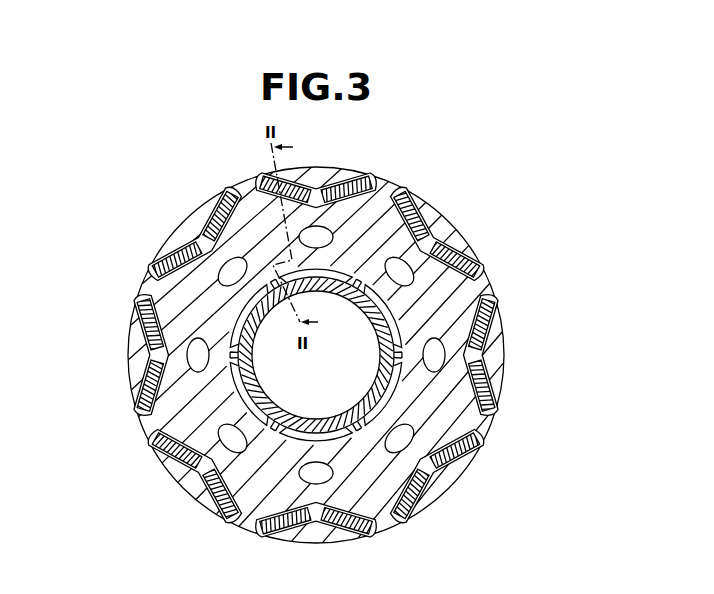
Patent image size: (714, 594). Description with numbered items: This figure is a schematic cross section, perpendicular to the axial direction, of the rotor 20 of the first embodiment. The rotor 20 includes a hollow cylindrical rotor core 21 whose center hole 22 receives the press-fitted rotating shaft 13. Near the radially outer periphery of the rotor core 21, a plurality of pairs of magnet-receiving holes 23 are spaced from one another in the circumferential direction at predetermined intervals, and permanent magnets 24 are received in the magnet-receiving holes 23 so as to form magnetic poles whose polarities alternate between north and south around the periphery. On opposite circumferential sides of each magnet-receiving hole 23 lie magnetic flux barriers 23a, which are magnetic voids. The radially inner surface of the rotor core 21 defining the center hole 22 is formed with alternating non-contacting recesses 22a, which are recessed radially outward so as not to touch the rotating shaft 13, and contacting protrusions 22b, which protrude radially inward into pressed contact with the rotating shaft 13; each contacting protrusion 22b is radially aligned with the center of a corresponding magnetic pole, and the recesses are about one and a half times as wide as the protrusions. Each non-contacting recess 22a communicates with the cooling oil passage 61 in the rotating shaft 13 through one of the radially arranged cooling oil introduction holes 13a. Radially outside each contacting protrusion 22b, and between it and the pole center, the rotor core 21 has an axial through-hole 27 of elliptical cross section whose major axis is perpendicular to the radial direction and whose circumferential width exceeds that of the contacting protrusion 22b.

The rotor 20 is at (178, 211).
The rotor core 21 is at (168, 241).
The rotating shaft 13 is at (241, 302).
The cooling oil introduction hole 13a is at (344, 290).
The cooling oil passage 61 is at (326, 393).
The permanent magnet 24 is at (410, 203).
The magnet-receiving hole 23 is at (457, 219).
The magnetic flux barrier 23a is at (488, 338).
The through-hole 27 is at (412, 421).
The center hole 22 is at (173, 455).
The non-contacting recess 22a is at (303, 438).
The contacting protrusion 22b is at (152, 446).